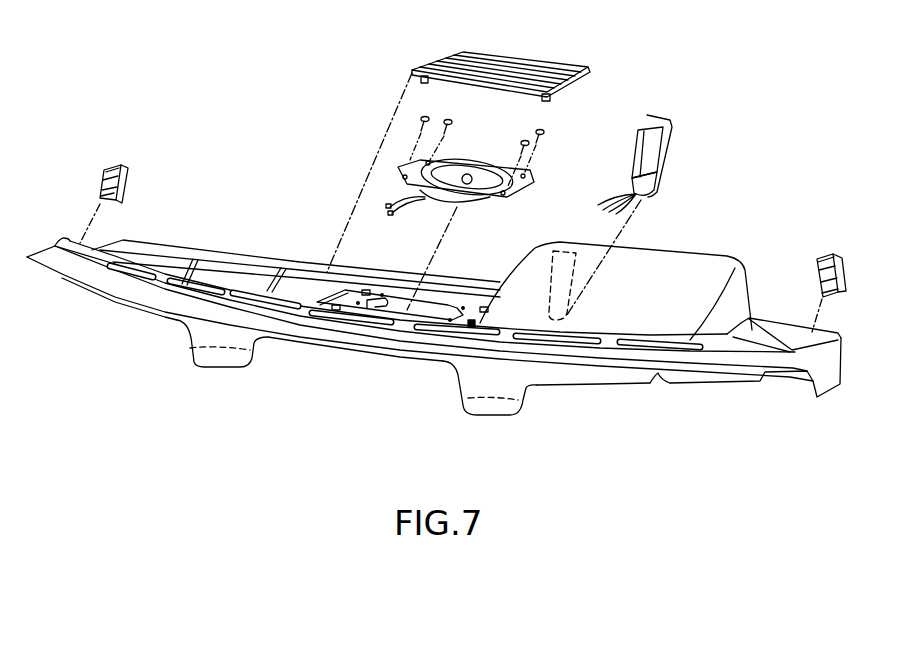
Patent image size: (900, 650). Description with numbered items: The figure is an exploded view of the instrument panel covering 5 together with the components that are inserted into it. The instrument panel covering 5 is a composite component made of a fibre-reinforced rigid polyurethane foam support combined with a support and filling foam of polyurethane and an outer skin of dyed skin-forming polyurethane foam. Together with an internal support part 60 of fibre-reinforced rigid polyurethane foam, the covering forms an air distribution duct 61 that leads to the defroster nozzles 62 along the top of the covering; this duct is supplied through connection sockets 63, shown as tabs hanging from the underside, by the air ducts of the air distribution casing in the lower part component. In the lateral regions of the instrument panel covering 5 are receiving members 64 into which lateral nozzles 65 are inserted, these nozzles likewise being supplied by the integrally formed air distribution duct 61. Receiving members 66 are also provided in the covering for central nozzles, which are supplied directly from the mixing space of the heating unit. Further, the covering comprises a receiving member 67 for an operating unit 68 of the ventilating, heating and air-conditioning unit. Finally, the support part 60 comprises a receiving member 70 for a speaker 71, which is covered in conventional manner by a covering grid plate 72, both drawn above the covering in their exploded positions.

The instrument panel covering 5 is at (397, 336).
The internal support part 60 is at (473, 306).
The air distribution duct 61 is at (636, 377).
The defroster nozzles 62 is at (257, 297).
The connection sockets 63 is at (207, 356).
The receiving members 64 is at (63, 238).
The lateral nozzles 65 is at (122, 165).
The receiving members 66 is at (407, 310).
The receiving member 67 is at (563, 266).
The operating unit 68 is at (672, 124).
The receiving member 70 is at (385, 298).
The speaker 71 is at (533, 177).
The covering grid plate 72 is at (585, 64).